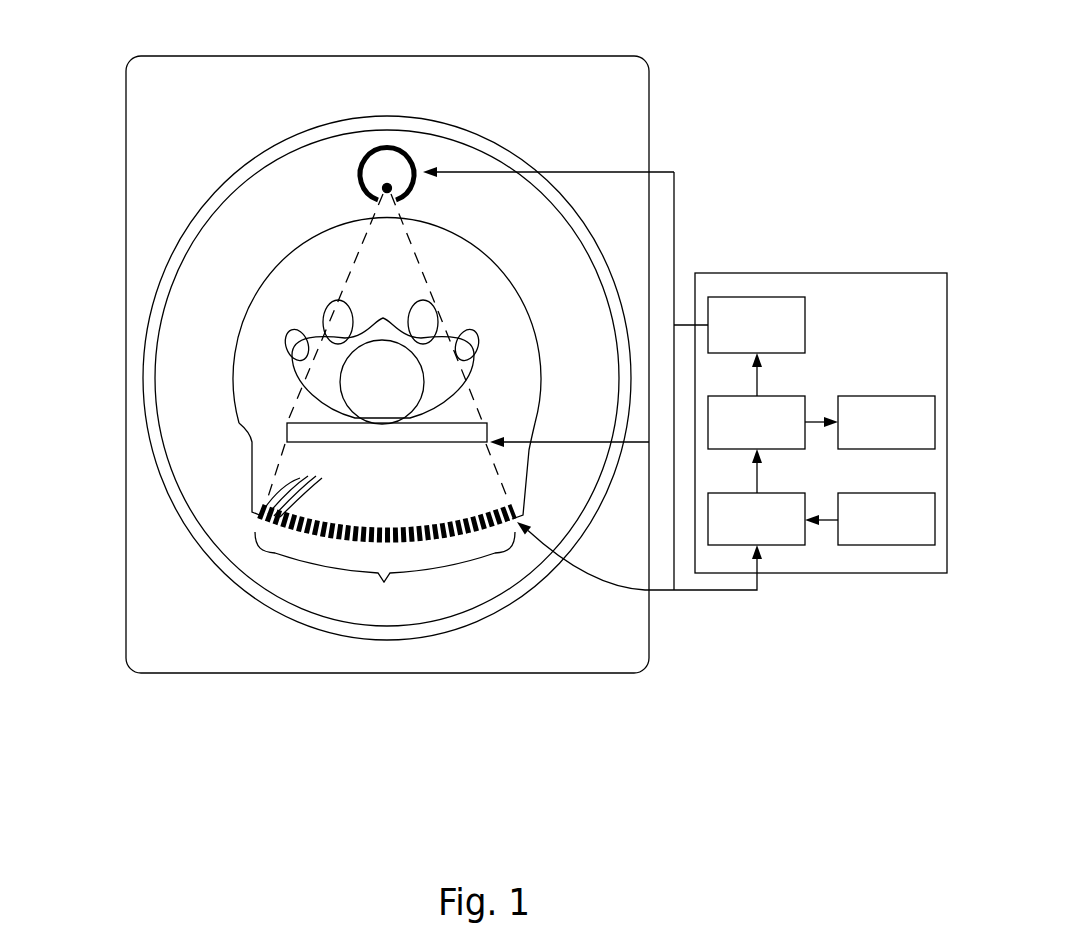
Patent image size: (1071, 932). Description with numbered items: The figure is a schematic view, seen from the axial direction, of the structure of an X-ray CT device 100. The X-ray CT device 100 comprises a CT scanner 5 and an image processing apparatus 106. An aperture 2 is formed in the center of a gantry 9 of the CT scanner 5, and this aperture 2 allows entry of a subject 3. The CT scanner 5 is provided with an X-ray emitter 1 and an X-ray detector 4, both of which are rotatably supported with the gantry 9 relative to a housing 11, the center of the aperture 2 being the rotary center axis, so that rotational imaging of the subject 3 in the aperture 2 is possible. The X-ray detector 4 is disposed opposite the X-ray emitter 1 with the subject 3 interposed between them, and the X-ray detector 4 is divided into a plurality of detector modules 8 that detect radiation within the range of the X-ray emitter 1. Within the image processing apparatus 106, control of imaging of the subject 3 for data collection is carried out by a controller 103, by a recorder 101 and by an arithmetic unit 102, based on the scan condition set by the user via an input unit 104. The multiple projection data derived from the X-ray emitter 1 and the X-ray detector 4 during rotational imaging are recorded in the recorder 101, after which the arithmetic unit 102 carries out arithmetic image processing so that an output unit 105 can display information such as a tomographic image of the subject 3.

The X-ray CT device 100 is at (767, 100).
The CT scanner 5 is at (98, 207).
The housing 11 is at (126, 478).
The aperture 2 is at (264, 282).
The gantry 9 is at (565, 318).
The X-ray emitter 1 is at (388, 186).
The subject 3 is at (312, 386).
The detector modules 8 is at (292, 483).
The X-ray detector 4 is at (385, 560).
The image processing apparatus 106 is at (868, 273).
The controller 103 is at (748, 297).
The arithmetic unit 102 is at (797, 396).
The output unit 105 is at (882, 396).
The recorder 101 is at (773, 545).
The input unit 104 is at (897, 545).